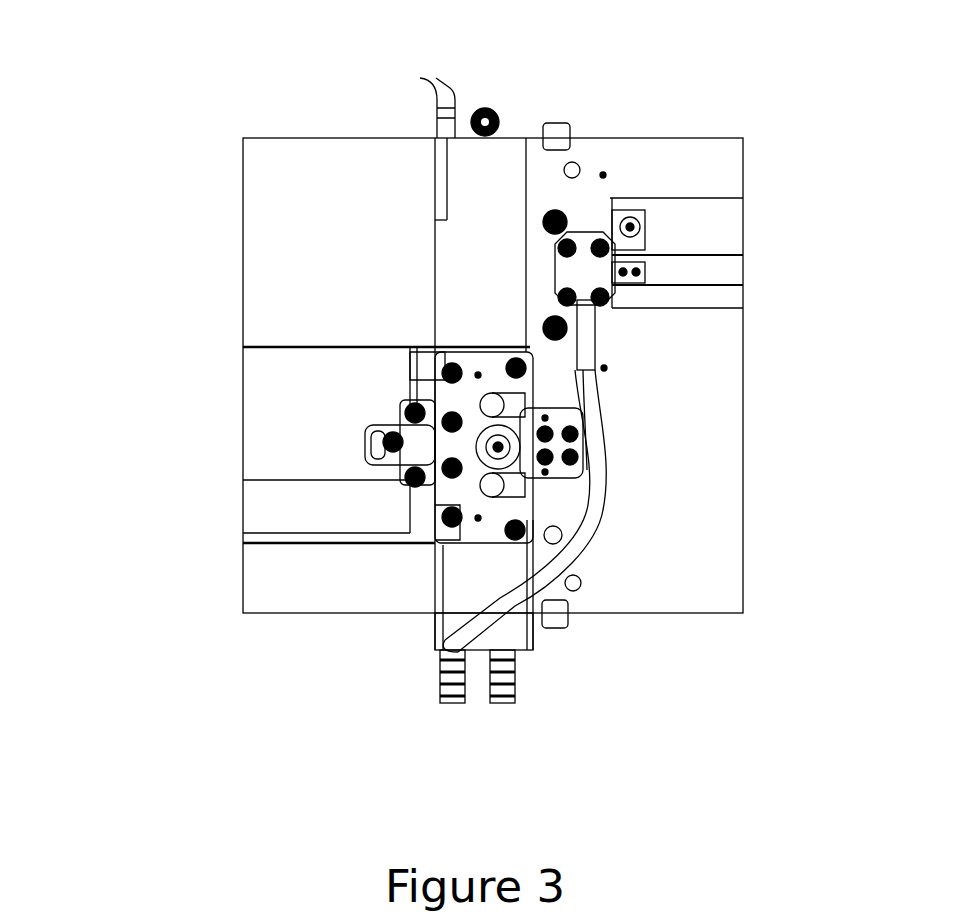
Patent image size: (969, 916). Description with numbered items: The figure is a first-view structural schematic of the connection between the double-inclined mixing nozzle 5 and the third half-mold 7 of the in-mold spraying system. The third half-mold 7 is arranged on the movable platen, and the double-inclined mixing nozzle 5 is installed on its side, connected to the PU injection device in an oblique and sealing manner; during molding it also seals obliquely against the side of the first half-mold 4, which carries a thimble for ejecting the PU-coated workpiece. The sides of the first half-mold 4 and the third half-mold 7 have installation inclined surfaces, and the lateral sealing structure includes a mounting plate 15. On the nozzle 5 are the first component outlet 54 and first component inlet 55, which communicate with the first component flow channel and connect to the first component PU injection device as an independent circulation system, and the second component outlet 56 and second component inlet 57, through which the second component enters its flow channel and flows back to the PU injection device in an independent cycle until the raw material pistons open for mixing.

The first half-mold 4 is at (322, 411).
The double-inclined mixing nozzle 5 is at (522, 470).
The third half-mold 7 is at (493, 300).
The mounting plate 15 is at (412, 368).
The first component outlet 54 is at (437, 365).
The first component inlet 55 is at (522, 362).
The second component outlet 56 is at (445, 520).
The second component inlet 57 is at (553, 542).